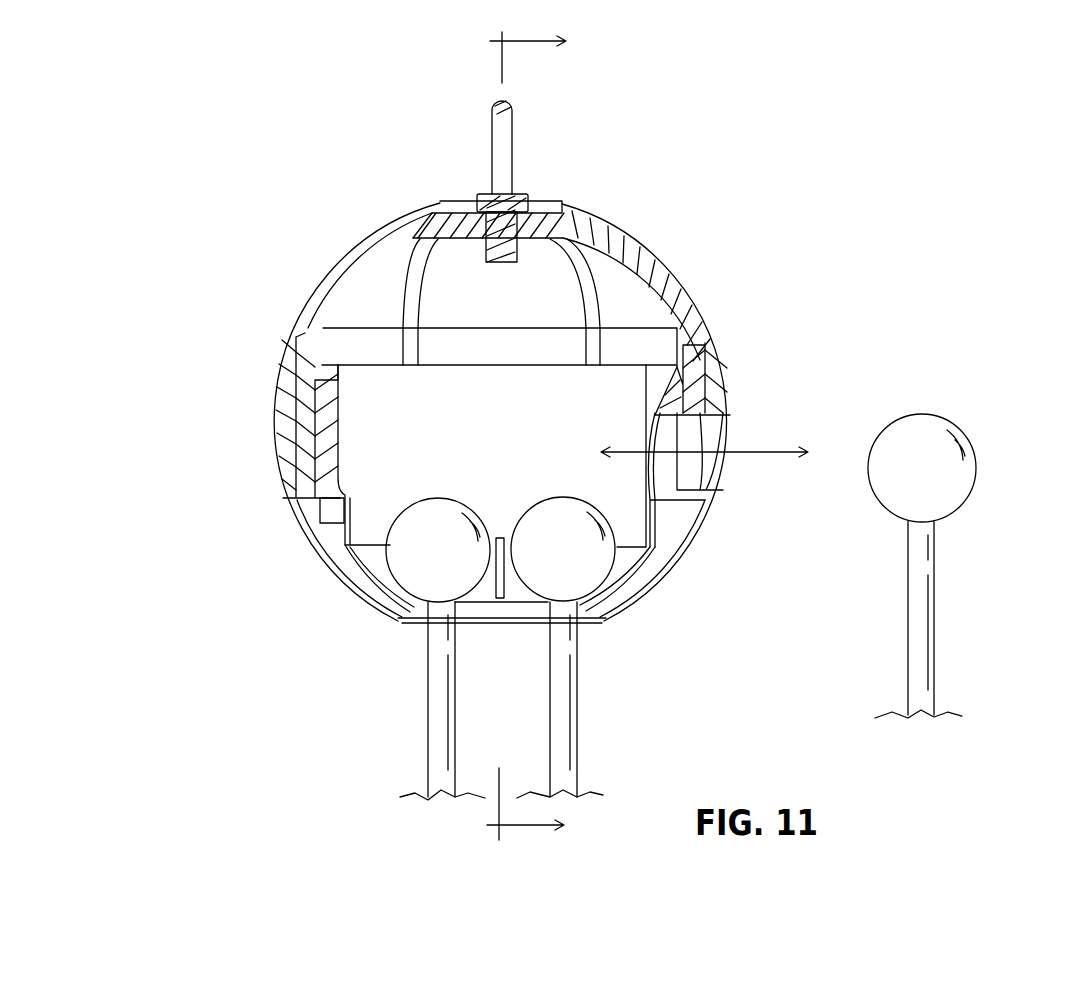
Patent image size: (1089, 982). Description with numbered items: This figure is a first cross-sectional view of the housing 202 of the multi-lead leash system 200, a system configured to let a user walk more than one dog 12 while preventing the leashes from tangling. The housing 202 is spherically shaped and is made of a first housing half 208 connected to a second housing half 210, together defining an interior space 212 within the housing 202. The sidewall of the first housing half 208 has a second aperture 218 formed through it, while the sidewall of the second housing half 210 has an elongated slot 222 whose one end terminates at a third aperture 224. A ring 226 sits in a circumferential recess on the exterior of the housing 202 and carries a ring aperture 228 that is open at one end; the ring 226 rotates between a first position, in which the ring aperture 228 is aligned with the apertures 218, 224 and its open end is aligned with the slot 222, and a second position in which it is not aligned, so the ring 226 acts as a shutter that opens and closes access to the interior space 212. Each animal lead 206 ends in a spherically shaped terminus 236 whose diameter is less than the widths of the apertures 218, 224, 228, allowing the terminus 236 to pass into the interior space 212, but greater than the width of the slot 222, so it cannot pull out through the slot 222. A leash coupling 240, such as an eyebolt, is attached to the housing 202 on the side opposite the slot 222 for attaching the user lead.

The dog 12 is at (510, 434).
The multi-lead leash system 200 is at (692, 152).
The housing 202 is at (357, 240).
The animal lead 206 is at (438, 705).
The first housing half 208 is at (668, 268).
The second housing half 210 is at (325, 572).
The interior space 212 is at (366, 380).
The second aperture 218 is at (690, 468).
The elongated slot 222 is at (417, 613).
The third aperture 224 is at (665, 485).
The ring 226 is at (288, 430).
The ring aperture 228 is at (712, 435).
The terminus 236 is at (447, 530).
The leash coupling 240 is at (503, 158).